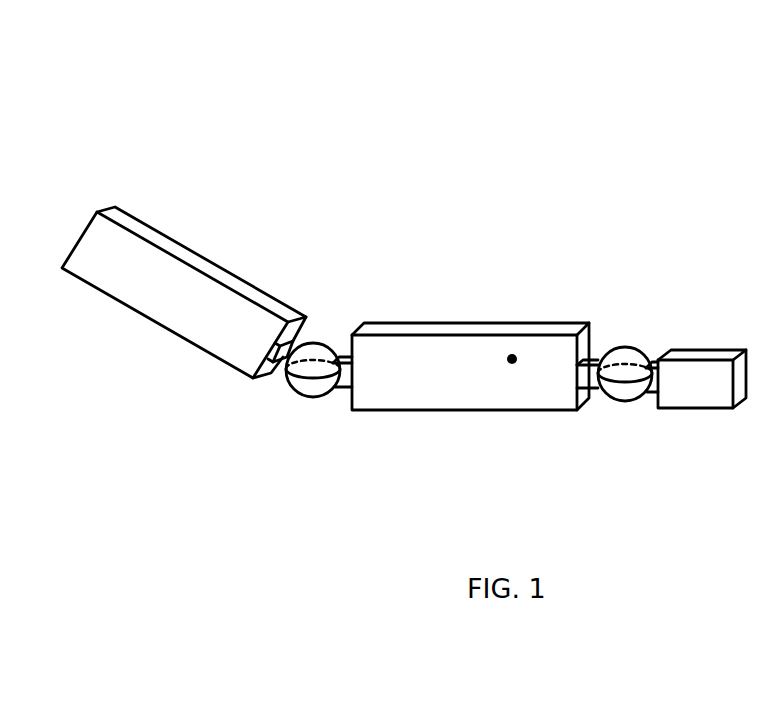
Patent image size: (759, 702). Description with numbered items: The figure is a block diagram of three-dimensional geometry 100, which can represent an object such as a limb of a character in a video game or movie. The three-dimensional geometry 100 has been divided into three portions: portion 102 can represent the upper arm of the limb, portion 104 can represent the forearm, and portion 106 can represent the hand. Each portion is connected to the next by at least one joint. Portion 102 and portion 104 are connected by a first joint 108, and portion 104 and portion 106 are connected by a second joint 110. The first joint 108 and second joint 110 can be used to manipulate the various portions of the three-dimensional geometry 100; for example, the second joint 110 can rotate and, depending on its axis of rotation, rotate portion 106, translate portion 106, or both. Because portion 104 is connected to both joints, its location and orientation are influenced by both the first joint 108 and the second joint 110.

The three-dimensional geometry 100 is at (383, 77).
The portion 102 is at (178, 341).
The portion 104 is at (462, 411).
The portion 106 is at (695, 409).
The first joint 108 is at (308, 398).
The second joint 110 is at (623, 403).